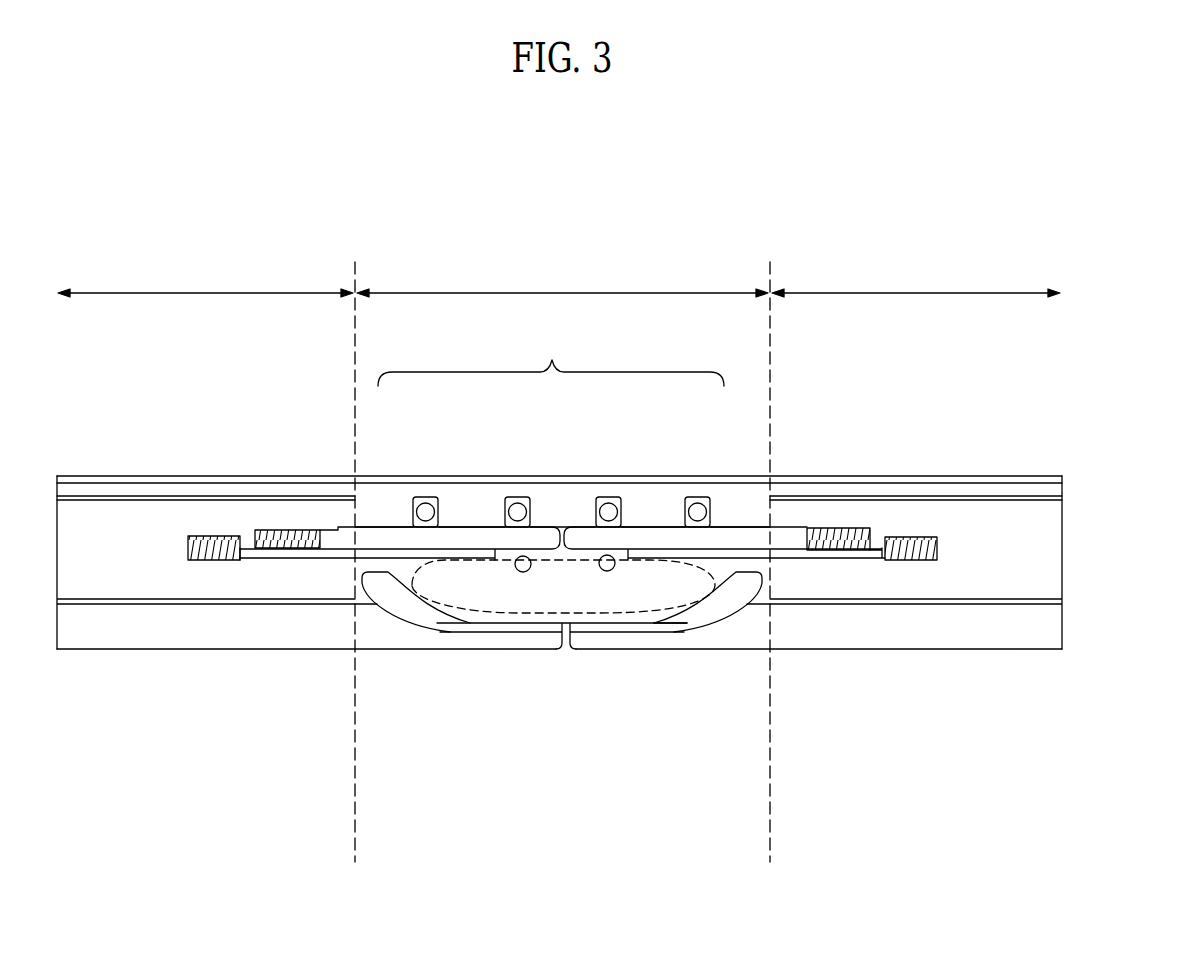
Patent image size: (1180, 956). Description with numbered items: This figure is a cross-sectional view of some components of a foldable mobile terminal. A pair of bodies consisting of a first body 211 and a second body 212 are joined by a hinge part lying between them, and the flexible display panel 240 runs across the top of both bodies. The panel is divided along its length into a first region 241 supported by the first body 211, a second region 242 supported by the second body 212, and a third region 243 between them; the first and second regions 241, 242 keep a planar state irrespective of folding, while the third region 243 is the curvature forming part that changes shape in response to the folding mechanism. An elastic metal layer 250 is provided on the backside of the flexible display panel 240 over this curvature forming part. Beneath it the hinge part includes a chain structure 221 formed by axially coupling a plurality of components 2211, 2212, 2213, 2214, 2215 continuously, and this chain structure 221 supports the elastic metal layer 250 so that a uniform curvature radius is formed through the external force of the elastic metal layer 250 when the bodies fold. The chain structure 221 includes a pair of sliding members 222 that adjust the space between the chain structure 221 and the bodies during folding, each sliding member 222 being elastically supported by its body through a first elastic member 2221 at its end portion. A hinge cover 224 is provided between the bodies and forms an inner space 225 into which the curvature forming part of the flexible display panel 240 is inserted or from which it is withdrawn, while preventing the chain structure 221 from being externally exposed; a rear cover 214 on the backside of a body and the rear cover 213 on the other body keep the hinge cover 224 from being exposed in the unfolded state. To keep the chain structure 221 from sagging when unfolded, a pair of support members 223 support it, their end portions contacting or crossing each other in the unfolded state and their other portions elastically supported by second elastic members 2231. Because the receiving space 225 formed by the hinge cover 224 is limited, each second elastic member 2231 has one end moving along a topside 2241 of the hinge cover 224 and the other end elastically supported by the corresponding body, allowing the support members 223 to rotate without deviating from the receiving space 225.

The first body 211 is at (125, 580).
The second body 212 is at (1032, 547).
The first lower housing 213 is at (110, 622).
The rear cover 214 is at (820, 632).
The chain structure 221 is at (551, 428).
The component 2211 is at (396, 512).
The component 2212 is at (475, 512).
The component 2213 is at (560, 512).
The component 2214 is at (653, 512).
The component 2215 is at (737, 512).
The sliding member 222 is at (247, 550).
The first elastic member 2221 is at (190, 562).
The support member 223 is at (465, 540).
The second elastic member 2231 is at (298, 528).
The hinge cover 224 is at (722, 607).
The topside of the hinge cover 2241 is at (673, 608).
The inner space 225 is at (595, 592).
The flexible display panel 240 is at (1062, 479).
The elastic metal layer 250 is at (1062, 490).
The first region 241 is at (205, 277).
The second region 242 is at (916, 277).
The third region 243 is at (562, 277).